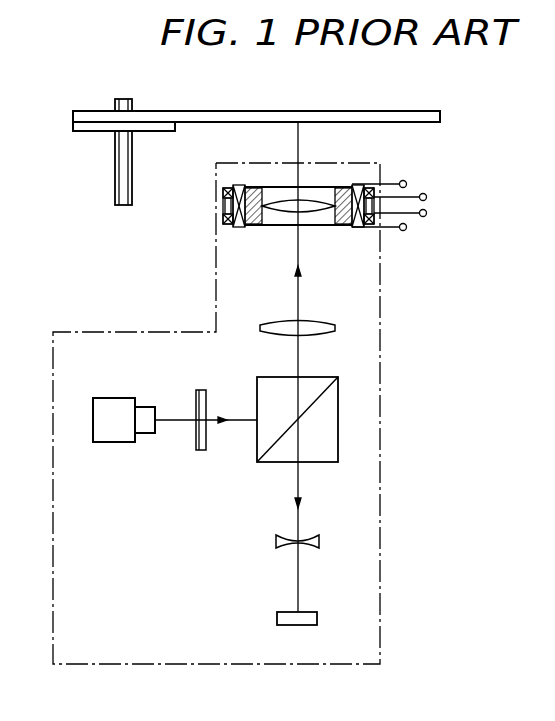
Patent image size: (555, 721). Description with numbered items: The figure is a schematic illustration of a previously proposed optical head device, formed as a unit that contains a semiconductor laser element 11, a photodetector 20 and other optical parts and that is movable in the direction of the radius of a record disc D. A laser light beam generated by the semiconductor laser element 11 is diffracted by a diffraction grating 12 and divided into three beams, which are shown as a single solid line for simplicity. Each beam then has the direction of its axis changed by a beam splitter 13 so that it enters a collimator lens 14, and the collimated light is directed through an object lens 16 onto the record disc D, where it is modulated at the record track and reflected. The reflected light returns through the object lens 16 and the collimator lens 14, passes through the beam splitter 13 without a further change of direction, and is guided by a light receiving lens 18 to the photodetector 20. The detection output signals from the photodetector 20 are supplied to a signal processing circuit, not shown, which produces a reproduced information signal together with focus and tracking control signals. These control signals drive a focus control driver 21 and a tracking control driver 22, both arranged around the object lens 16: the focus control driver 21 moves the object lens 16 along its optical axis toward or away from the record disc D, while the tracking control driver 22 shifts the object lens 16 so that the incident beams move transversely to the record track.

The record disc D is at (231, 111).
The semiconductor laser element 11 is at (118, 443).
The diffraction grating 12 is at (199, 451).
The beam splitter 13 is at (323, 463).
The collimator lens 14 is at (319, 336).
The object lens 16 is at (281, 212).
The light receiving lens 18 is at (320, 546).
The photodetector 20 is at (319, 624).
The focus control driver 21 is at (241, 186).
The tracking control driver 22 is at (227, 188).